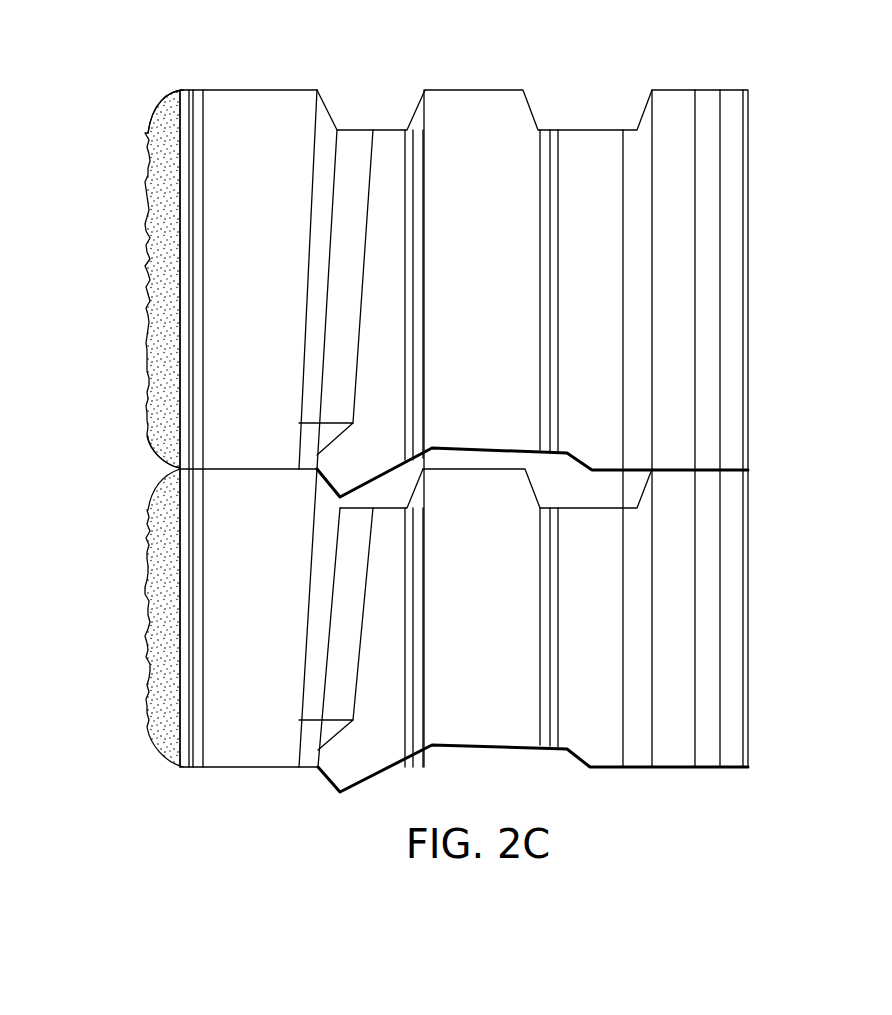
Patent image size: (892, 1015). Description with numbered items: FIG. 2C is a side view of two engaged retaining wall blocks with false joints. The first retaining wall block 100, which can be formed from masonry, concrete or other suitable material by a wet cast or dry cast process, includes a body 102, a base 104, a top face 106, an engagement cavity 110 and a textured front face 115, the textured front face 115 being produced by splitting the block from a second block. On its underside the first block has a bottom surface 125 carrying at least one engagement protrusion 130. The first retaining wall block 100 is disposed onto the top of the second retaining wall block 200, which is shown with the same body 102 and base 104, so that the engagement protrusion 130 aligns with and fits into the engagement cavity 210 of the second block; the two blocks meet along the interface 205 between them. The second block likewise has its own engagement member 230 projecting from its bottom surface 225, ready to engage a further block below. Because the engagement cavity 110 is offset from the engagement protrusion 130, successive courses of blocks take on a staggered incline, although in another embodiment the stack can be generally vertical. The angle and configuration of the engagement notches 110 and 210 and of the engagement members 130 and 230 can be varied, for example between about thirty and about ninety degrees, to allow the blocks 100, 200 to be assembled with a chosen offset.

The retaining wall block 100 is at (115, 292).
The body 102 is at (273, 292).
The base 104 is at (500, 292).
The top face 106 is at (260, 88).
The engagement cavity 110 is at (360, 130).
The textured front face 115 is at (147, 245).
The bottom surface 125 is at (243, 478).
The engagement protrusion 130 is at (341, 462).
The second retaining wall block 200 is at (114, 608).
The interface line 205 is at (706, 465).
The engagement cavity 210 is at (360, 508).
The bottom surface of second member 225 is at (245, 777).
The engagement member 230 is at (327, 782).